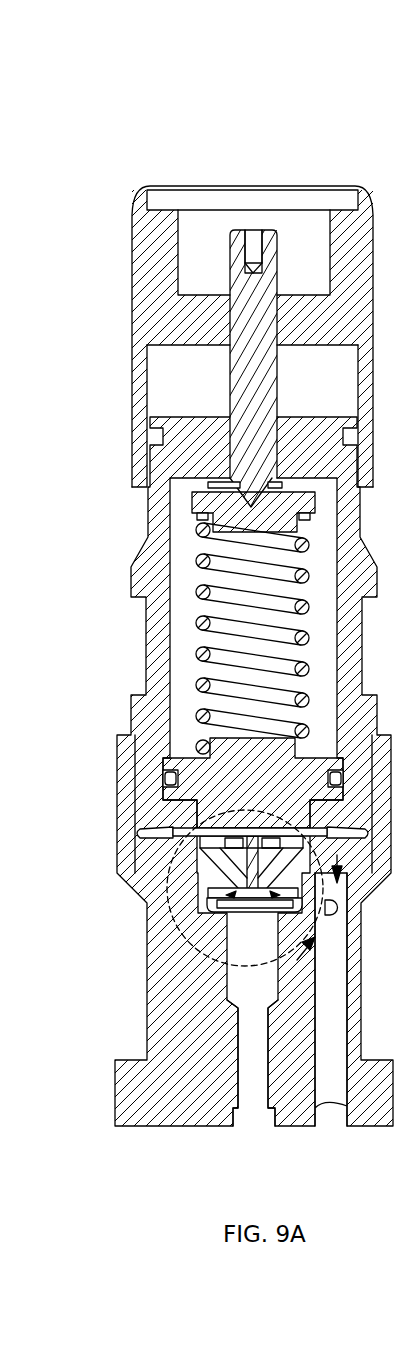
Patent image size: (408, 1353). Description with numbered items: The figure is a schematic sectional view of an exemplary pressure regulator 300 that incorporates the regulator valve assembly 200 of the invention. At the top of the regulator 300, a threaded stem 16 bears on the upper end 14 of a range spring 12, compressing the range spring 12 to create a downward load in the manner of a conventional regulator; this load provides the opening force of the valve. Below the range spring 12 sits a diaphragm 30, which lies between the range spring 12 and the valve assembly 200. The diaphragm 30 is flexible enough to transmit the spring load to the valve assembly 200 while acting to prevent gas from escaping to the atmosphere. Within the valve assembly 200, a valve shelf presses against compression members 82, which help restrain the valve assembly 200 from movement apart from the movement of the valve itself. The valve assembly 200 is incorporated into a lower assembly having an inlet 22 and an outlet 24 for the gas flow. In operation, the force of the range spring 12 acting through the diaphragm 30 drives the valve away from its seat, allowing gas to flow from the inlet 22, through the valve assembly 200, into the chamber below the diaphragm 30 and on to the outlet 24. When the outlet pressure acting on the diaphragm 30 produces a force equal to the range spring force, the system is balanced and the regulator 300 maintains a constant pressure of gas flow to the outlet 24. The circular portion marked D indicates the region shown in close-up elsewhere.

The pressure regulator 300 is at (233, 153).
The threaded stem 16 is at (250, 427).
The upper end of the range spring 14 is at (202, 532).
The range spring 12 is at (202, 652).
The diaphragm 30 is at (280, 827).
The compression members 82 is at (183, 842).
The regulator valve assembly 200 is at (188, 880).
The inlet 22 is at (250, 1115).
The outlet 24 is at (323, 1107).